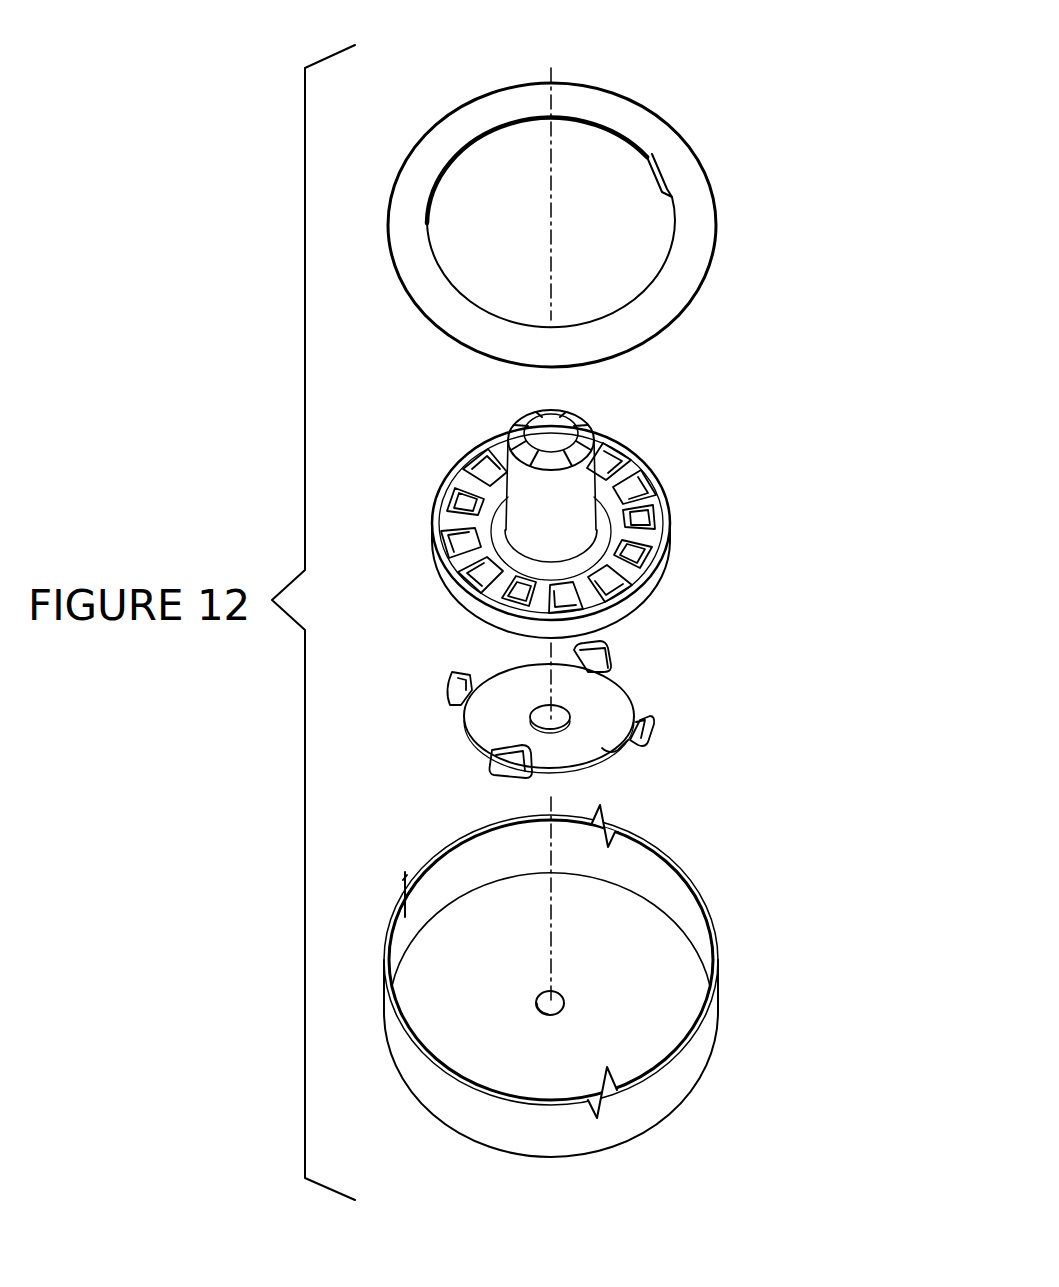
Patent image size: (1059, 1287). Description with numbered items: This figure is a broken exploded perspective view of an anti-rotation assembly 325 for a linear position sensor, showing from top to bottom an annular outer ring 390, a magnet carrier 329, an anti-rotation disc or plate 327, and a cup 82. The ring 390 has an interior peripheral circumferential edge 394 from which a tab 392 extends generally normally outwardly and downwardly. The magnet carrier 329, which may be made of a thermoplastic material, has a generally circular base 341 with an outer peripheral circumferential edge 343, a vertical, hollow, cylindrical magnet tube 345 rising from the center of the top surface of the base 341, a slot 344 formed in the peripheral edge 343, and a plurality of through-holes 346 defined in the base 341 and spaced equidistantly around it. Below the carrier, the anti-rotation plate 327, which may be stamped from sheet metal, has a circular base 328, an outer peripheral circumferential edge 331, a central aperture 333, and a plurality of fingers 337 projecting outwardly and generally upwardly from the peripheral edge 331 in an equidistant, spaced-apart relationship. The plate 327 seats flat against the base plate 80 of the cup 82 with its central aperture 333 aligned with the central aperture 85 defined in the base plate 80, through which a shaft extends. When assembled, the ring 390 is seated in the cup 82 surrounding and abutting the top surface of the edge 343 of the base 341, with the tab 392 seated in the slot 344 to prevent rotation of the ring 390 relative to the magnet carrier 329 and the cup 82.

The annular outer ring 390 is at (565, 198).
The interior peripheral circumferential edge 394 is at (600, 131).
The tab 392 is at (655, 182).
The anti-rotation assembly 325 is at (596, 576).
The magnet carrier 329 is at (545, 486).
The base 341 is at (483, 548).
The outer peripheral circumferential edge 343 is at (442, 480).
The slot 344 is at (637, 497).
The magnet tube 345 is at (562, 402).
The through-holes 346 is at (487, 493).
The anti-rotation plate 327 is at (609, 693).
The circular base 328 is at (618, 723).
The outer peripheral circumferential edge 331 is at (615, 682).
The central aperture 333 is at (462, 725).
The fingers 337 is at (560, 652).
The cup 82 is at (616, 946).
The base plate 80 is at (665, 988).
The central aperture 85 is at (535, 998).